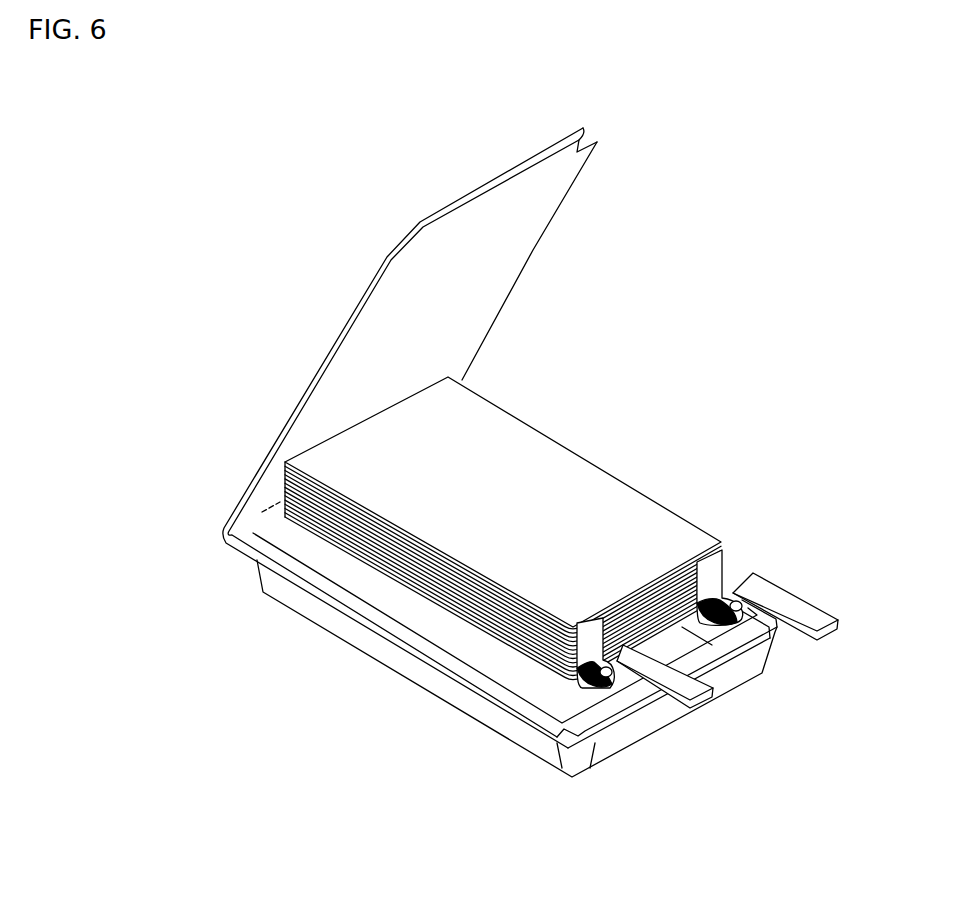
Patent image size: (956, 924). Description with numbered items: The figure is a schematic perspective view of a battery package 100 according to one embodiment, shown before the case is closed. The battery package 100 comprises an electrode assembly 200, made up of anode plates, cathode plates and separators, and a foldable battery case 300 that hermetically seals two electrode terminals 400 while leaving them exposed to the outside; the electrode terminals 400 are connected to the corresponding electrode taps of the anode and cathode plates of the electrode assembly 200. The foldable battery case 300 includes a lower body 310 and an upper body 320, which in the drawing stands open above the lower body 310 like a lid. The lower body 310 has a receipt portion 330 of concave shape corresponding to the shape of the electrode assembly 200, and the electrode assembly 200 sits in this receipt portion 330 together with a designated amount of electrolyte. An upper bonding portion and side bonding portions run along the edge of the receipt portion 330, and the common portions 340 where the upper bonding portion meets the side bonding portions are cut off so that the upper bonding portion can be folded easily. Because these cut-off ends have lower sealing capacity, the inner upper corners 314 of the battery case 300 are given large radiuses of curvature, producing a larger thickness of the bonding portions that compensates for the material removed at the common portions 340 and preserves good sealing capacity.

The battery package 100 is at (206, 189).
The electrode assembly 200 is at (592, 448).
The foldable battery case 300 is at (200, 538).
The lower body 310 is at (423, 682).
The upper body 320 is at (352, 345).
The receipt portion 330 is at (360, 592).
The common portions 340 is at (400, 237).
The inner upper corners 314 is at (558, 732).
The electrode terminals 400 is at (695, 692).